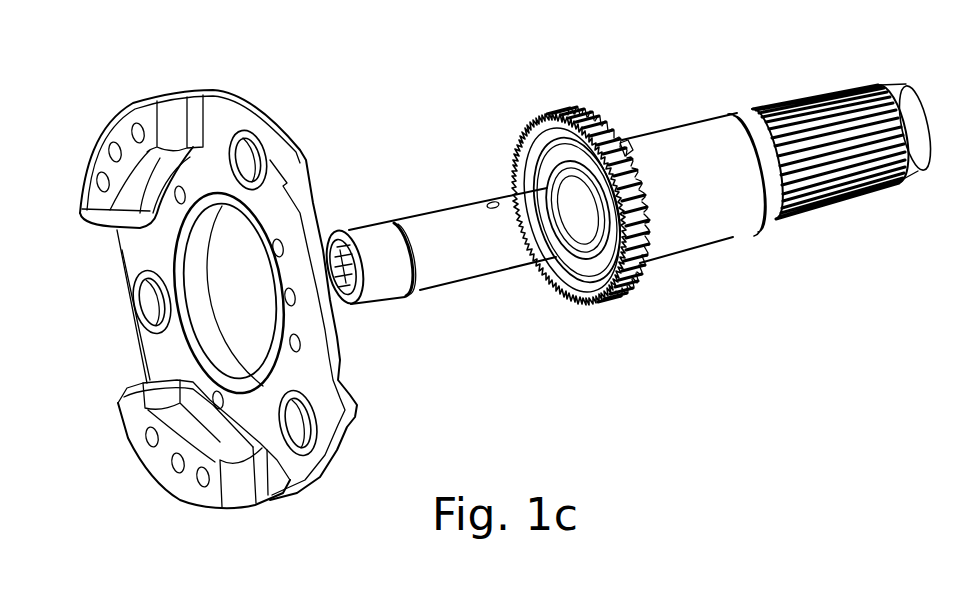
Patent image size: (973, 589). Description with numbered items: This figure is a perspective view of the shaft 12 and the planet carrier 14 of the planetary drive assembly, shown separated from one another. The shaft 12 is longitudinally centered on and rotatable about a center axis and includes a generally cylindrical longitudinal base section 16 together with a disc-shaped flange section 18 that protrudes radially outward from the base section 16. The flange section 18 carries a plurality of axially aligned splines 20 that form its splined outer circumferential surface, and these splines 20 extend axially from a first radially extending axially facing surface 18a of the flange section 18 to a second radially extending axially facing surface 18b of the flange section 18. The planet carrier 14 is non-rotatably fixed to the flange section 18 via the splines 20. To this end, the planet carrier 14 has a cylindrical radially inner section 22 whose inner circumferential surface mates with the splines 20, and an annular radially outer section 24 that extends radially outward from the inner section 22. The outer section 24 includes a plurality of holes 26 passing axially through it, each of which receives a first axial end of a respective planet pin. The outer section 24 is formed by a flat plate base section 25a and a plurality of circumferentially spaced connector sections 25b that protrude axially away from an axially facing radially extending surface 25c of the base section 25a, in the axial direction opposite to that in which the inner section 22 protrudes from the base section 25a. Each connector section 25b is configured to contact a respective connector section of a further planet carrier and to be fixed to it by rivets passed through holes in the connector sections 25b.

The shaft 12 is at (588, 107).
The planet carrier 14 is at (248, 97).
The longitudinal base section 16 is at (480, 247).
The flange section 18 is at (595, 275).
The first radially extending axially facing surface 18a is at (623, 293).
The second radially extending axially facing surface 18b is at (647, 190).
The splines 20 is at (643, 270).
The cylindrical radially inner section 22 is at (213, 337).
The annular radially outer section 24 is at (218, 147).
The flat plate base section 25a is at (140, 247).
The connector sections 25b is at (100, 123).
The axially facing radially extending surface 25c is at (170, 348).
The holes 26 is at (152, 302).